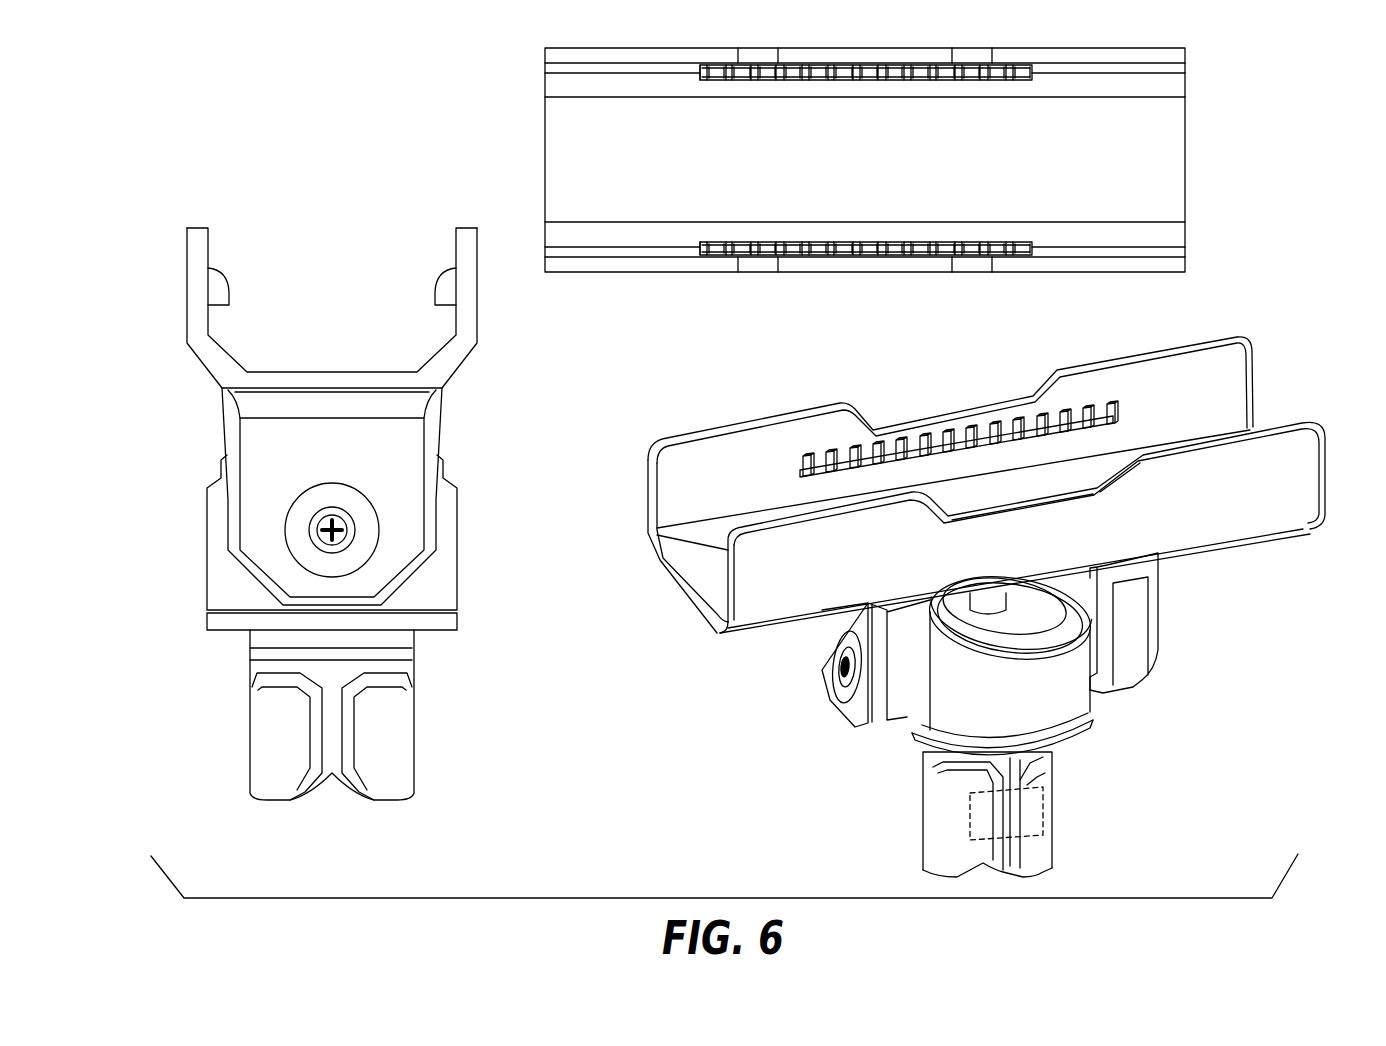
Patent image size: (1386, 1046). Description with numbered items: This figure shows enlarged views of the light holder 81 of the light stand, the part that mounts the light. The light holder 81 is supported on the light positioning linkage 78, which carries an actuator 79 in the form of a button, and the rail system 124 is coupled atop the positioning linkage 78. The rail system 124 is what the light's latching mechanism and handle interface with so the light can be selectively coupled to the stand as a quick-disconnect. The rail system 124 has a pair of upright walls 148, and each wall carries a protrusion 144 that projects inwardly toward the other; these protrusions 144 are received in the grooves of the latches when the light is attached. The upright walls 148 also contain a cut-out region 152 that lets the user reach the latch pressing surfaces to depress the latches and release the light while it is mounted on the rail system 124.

The light positioning linkage 78 is at (392, 730).
The actuator 79 is at (1050, 803).
The light holder 81 is at (428, 112).
The rail system 124 is at (187, 327).
The protrusions 144 is at (226, 280).
The upright walls 148 is at (470, 236).
The cut-out region 152 is at (973, 415).